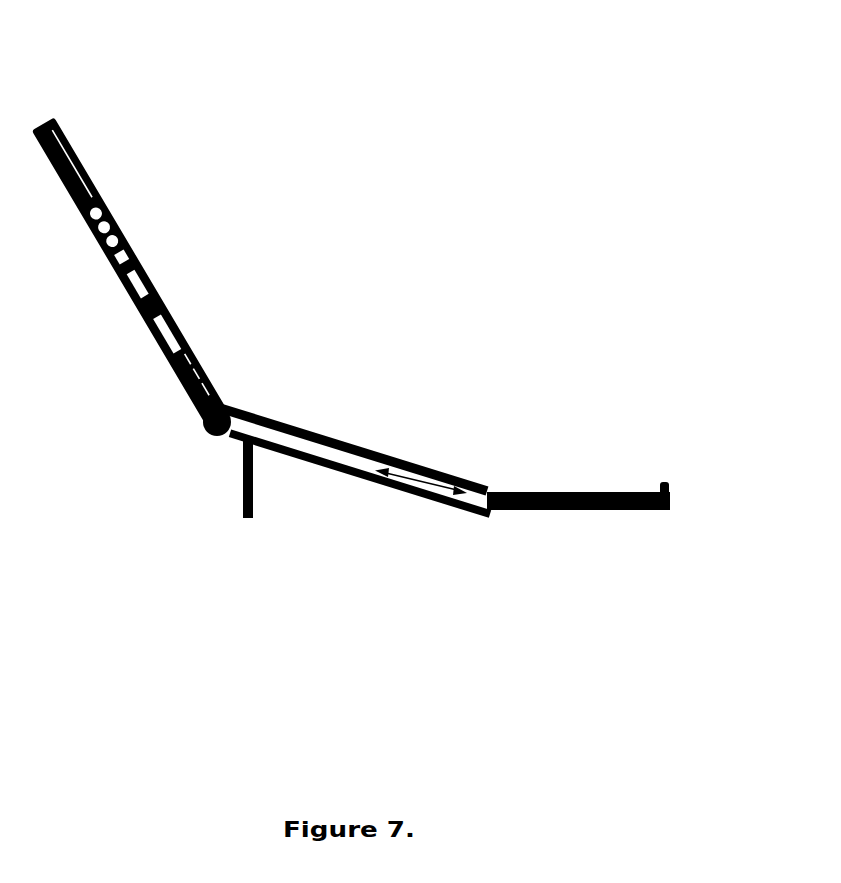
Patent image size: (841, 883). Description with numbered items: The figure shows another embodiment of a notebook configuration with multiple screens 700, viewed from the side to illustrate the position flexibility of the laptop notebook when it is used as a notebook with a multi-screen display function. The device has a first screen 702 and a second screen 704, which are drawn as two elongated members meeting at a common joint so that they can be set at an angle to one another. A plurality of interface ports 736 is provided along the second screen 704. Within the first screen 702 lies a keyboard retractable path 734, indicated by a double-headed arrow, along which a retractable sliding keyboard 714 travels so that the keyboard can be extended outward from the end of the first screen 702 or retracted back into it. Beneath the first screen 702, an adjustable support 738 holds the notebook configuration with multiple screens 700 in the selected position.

The notebook configuration with multiple screens 700 is at (220, 374).
The first screen 702 is at (365, 447).
The second screen 704 is at (152, 284).
The retractable sliding keyboard 714 is at (600, 493).
The keyboard retractable path 734 is at (432, 473).
The plurality of interface ports 736 is at (115, 223).
The adjustable support 738 is at (240, 482).